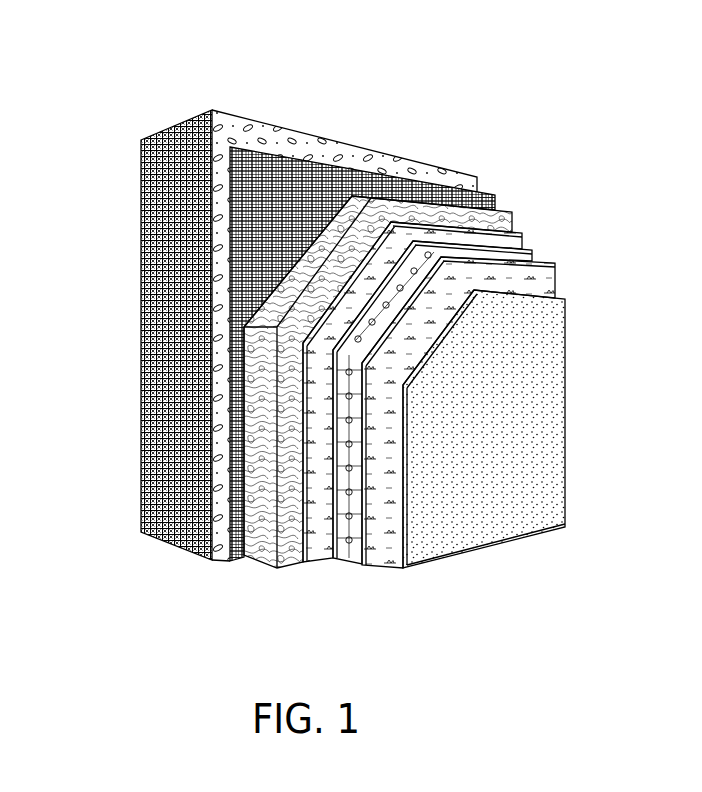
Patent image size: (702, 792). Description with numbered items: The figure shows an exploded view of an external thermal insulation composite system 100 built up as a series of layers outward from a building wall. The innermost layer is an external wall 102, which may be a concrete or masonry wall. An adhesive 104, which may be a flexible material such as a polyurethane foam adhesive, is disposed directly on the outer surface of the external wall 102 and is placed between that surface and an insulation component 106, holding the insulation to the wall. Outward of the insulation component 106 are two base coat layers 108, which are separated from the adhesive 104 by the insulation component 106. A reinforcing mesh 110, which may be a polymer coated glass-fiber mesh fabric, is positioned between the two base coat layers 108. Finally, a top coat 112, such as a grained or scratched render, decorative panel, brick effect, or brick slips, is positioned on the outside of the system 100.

The external thermal insulation composite system 100 is at (113, 85).
The external wall 102 is at (141, 283).
The adhesive 104 is at (300, 168).
The insulation component 106 is at (263, 553).
The base coat layers 108 is at (542, 272).
The reinforcing mesh 110 is at (348, 557).
The top coat 112 is at (440, 545).